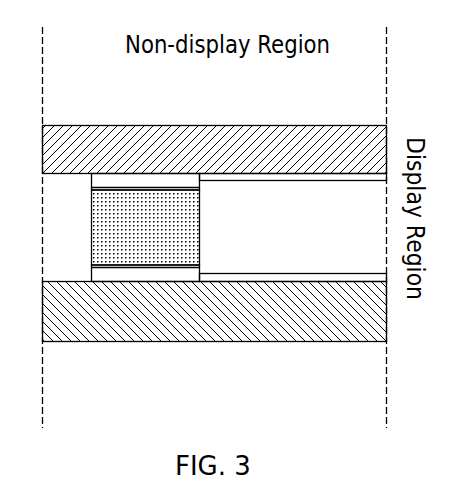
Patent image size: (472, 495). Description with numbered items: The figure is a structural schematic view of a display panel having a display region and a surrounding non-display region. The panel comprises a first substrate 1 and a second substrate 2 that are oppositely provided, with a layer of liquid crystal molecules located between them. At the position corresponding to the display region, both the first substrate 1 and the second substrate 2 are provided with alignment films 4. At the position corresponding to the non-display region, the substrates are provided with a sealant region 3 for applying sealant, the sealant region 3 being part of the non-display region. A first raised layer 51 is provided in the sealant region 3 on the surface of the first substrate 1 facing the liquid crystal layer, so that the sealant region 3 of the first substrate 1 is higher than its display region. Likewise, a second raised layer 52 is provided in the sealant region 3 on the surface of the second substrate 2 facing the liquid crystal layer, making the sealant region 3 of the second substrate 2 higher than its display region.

The first substrate 1 is at (267, 144).
The second substrate 2 is at (262, 324).
The sealant region 3 is at (98, 216).
The alignment film 4 is at (276, 174).
The first raised layer 51 is at (170, 182).
The second raised layer 52 is at (158, 279).